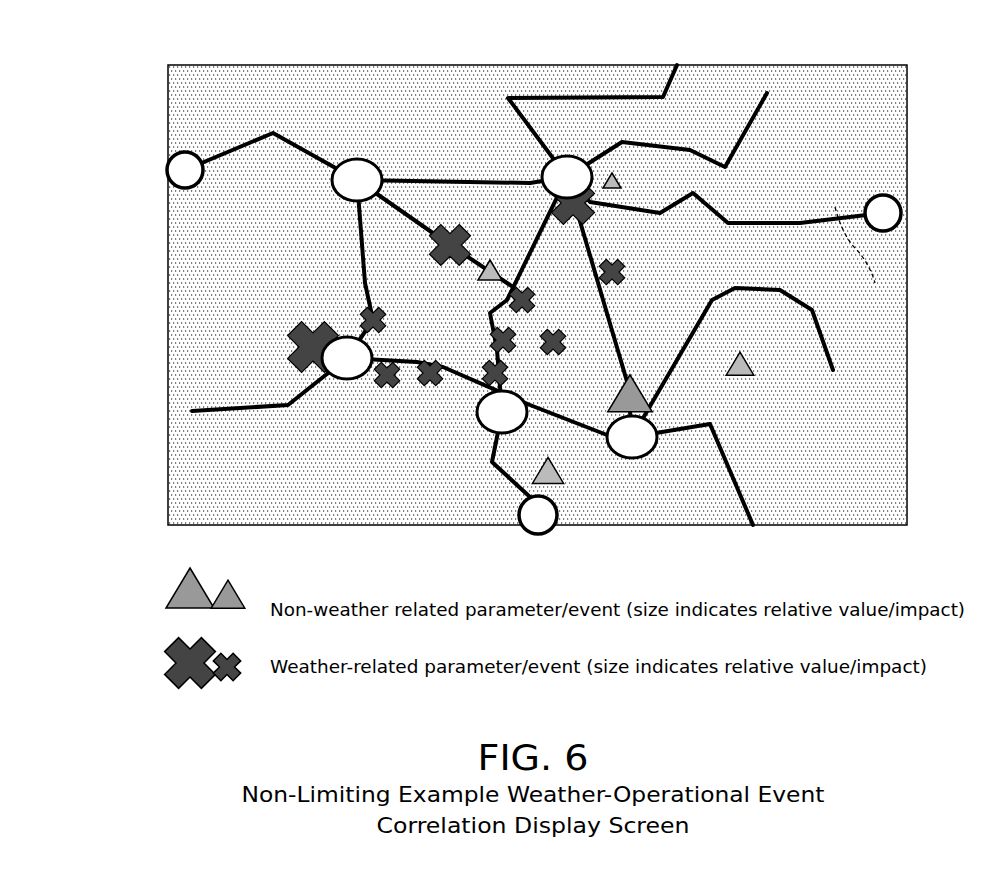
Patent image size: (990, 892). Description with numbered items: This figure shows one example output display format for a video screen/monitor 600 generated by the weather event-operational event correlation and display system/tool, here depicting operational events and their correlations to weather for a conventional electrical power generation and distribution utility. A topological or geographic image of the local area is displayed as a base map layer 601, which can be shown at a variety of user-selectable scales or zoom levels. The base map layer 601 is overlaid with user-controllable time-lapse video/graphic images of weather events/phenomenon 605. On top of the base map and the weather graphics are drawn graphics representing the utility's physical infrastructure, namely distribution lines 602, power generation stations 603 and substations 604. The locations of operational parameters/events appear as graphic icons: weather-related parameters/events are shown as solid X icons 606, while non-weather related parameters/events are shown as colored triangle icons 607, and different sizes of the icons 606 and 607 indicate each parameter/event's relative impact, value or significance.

The video screen/monitor 600 is at (908, 150).
The base map layer 601 is at (213, 78).
The distribution lines 602 is at (460, 180).
The power generation stations 603 is at (167, 170).
The substations 604 is at (345, 158).
The weather events/phenomenon 605 is at (573, 137).
The solid X icons 606 is at (597, 223).
The colored triangle icons 607 is at (668, 390).